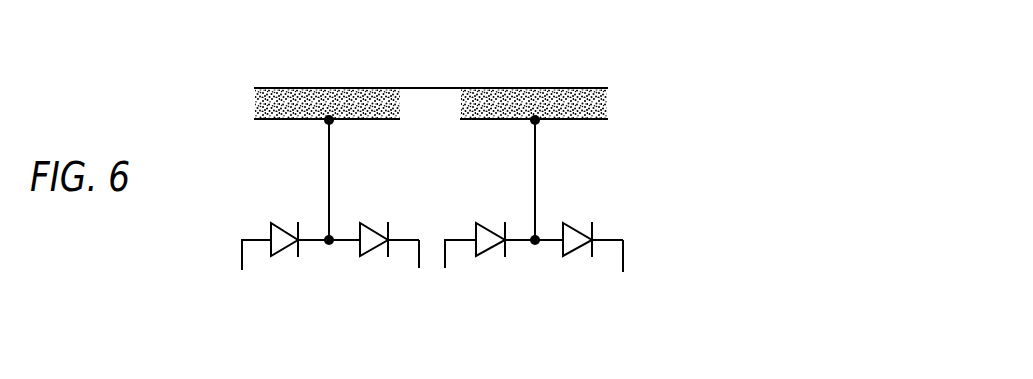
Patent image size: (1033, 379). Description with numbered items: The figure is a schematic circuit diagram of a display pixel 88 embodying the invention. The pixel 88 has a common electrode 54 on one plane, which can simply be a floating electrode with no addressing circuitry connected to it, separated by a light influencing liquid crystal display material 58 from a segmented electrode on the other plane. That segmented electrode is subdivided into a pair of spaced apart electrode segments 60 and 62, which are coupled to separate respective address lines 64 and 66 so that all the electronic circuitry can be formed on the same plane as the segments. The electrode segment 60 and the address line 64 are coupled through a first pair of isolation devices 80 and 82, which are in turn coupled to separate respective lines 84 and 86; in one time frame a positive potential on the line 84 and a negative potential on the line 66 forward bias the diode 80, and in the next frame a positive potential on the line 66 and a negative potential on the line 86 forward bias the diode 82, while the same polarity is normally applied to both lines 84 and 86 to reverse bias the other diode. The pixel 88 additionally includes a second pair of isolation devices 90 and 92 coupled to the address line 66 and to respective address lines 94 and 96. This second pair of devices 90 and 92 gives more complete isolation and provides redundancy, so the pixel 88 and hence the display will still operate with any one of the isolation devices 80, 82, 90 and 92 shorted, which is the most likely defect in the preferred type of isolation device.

The common electrode 54 is at (428, 87).
The liquid crystal display material 58 is at (262, 104).
The electrode segment 60 is at (362, 122).
The electrode segment 62 is at (488, 122).
The address line 64 is at (327, 176).
The address line 66 is at (537, 176).
The isolation device 80 is at (282, 250).
The isolation device 82 is at (370, 250).
The line 84 is at (236, 258).
The line 86 is at (420, 258).
The pixel 88 is at (680, 156).
The isolation device 90 is at (490, 250).
The isolation device 92 is at (574, 250).
The address line 94 is at (447, 258).
The address line 96 is at (625, 253).